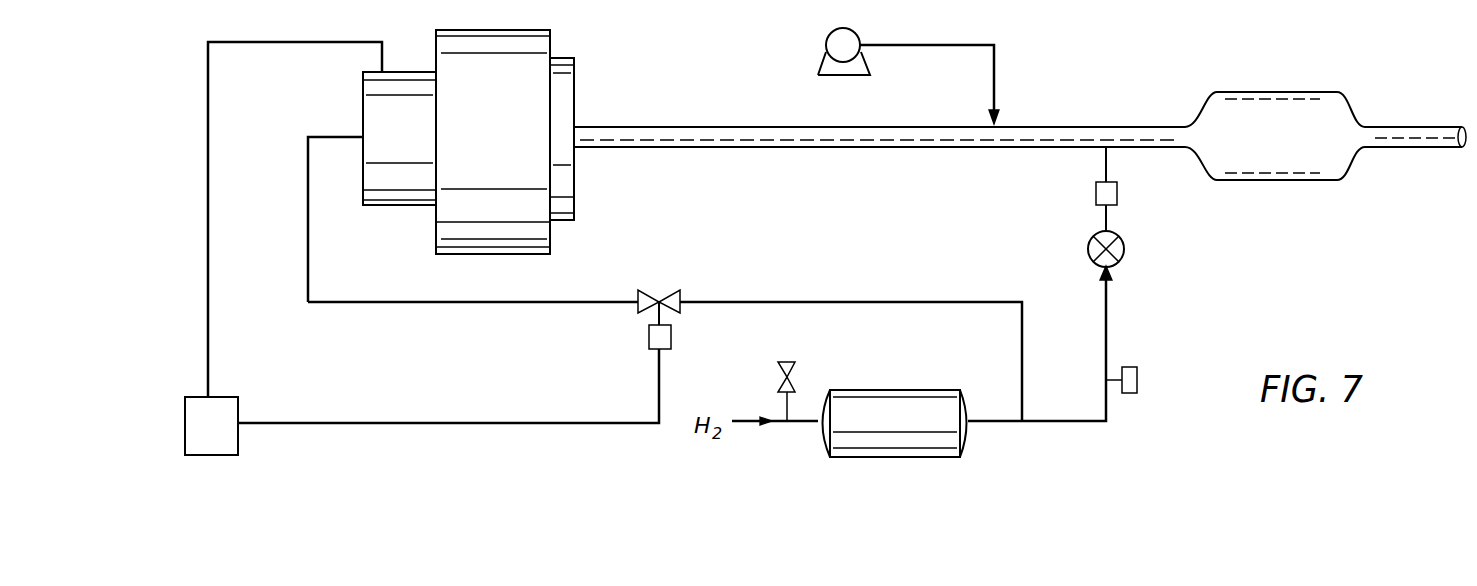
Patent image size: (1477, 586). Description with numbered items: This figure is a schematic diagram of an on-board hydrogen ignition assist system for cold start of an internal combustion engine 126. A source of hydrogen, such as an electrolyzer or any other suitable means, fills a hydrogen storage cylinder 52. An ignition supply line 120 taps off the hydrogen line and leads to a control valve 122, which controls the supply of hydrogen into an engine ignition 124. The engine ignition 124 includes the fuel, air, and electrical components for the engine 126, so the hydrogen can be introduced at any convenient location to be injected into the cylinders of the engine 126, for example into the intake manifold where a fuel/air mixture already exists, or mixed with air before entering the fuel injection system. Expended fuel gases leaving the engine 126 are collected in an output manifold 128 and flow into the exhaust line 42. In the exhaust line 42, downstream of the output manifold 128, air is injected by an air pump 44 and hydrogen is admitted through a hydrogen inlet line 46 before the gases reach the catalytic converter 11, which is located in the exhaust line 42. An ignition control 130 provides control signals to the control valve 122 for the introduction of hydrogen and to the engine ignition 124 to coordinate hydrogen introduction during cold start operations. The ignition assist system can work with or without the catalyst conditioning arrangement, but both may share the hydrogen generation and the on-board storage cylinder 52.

The catalytic converter 11 is at (1352, 168).
The exhaust line 42 is at (910, 148).
The air pump 44 is at (826, 47).
The hydrogen inlet line 46 is at (1103, 165).
The hydrogen storage cylinder 52 is at (900, 390).
The ignition supply line 120 is at (1024, 343).
The control valve 122 is at (668, 288).
The engine ignition 124 is at (410, 195).
The internal combustion engine 126 is at (530, 232).
The output manifold 128 is at (568, 81).
The ignition control 130 is at (222, 410).